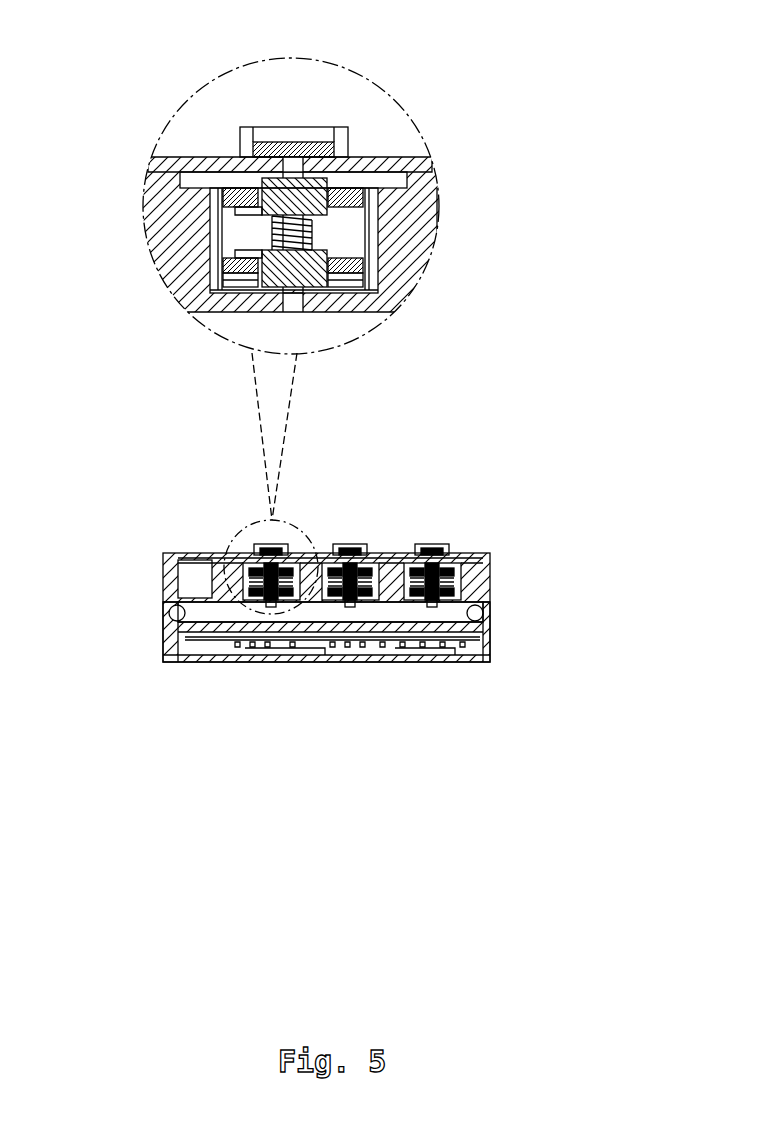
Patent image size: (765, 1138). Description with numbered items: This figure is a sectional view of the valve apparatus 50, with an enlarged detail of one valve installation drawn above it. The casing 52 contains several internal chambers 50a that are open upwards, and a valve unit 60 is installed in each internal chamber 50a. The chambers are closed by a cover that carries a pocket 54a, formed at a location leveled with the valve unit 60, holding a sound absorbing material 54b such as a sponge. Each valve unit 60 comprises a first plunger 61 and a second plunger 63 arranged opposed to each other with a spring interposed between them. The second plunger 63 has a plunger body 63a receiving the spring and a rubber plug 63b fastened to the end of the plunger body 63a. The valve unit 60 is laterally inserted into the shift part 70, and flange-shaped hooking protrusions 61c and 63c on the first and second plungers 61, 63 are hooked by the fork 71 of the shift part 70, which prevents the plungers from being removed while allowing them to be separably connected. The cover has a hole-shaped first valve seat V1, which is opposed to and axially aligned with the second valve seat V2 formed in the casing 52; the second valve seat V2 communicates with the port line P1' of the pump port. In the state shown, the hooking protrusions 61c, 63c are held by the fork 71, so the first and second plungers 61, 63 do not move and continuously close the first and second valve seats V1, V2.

The valve apparatus 50 is at (508, 560).
The internal chamber 50a is at (248, 568).
The casing 52 is at (395, 245).
The pocket 54a is at (270, 128).
The sound absorbing material 54b is at (318, 153).
The valve unit 60 is at (263, 597).
The first plunger 61 is at (262, 186).
The hooking protrusion 61c is at (238, 210).
The second plunger 63 is at (194, 323).
The plunger body 63a is at (280, 296).
The rubber plug 63b is at (255, 263).
The hooking protrusion 63c is at (240, 252).
The shift part 70 is at (391, 245).
The fork 71 is at (345, 201).
The first valve seat V1 is at (335, 180).
The second valve seat V2 is at (298, 300).
The port line P1' is at (279, 630).